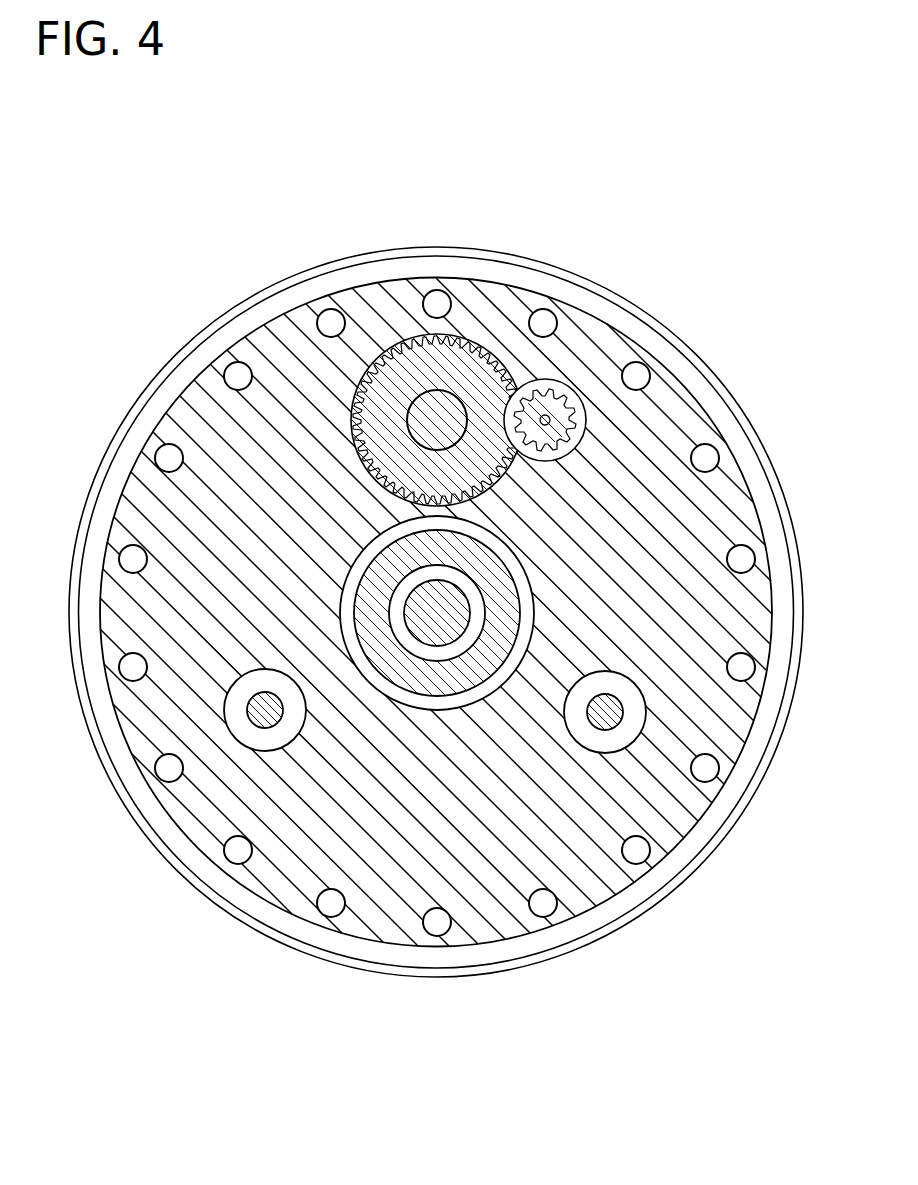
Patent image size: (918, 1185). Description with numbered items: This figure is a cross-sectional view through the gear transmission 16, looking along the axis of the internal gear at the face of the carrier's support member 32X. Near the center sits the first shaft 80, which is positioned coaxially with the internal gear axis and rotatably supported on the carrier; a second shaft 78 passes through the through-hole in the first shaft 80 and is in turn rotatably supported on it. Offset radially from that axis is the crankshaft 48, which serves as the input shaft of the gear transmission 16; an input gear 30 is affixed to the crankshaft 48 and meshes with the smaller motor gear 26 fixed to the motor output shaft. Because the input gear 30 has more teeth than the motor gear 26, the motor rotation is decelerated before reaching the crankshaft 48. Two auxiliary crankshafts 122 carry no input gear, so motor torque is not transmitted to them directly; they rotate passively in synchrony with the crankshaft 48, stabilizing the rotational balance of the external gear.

The gear transmission 16 is at (768, 117).
The support member 32X is at (283, 358).
The input gear 30 is at (416, 370).
The crankshaft 48 is at (452, 402).
The motor gear 26 is at (577, 398).
The first shaft 80 is at (490, 660).
The second shaft 78 is at (438, 633).
The auxiliary crankshafts 122 is at (252, 712).